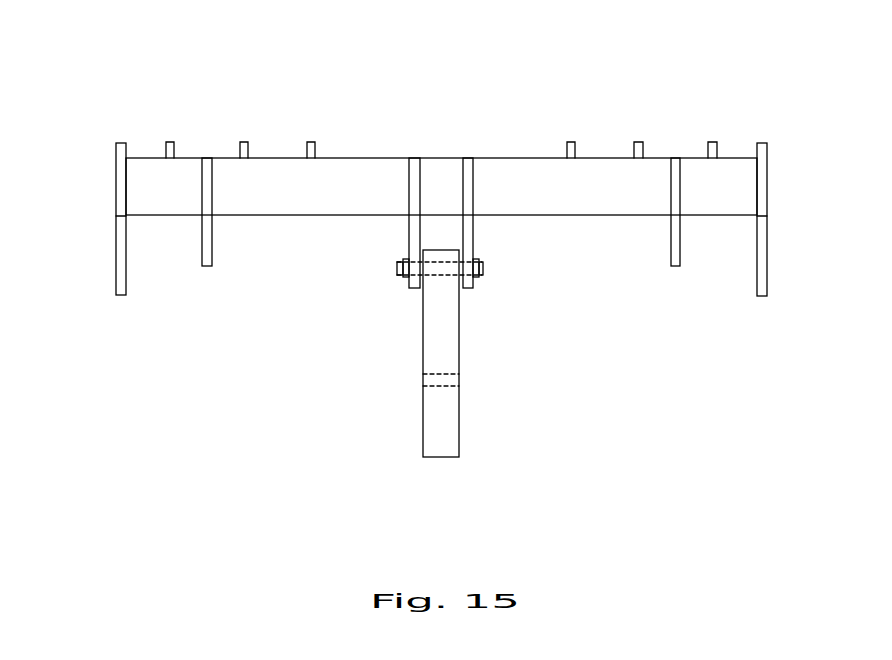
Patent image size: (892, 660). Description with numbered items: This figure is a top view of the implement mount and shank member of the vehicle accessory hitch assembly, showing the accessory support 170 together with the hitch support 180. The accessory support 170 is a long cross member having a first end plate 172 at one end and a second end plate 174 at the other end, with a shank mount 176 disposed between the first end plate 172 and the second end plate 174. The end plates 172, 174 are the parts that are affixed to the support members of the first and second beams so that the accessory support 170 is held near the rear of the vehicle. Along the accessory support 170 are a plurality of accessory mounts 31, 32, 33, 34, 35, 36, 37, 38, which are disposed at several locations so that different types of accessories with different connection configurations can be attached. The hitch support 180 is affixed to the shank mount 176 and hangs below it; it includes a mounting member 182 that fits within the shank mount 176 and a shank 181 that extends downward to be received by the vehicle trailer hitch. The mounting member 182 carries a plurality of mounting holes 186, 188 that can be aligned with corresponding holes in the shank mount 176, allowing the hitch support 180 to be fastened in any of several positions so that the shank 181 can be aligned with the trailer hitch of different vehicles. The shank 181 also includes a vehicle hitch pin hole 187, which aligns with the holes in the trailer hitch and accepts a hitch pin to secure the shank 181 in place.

The accessory support 170 is at (377, 118).
The first end plate 172 is at (116, 172).
The second end plate 174 is at (767, 172).
The shank mount 176 is at (473, 183).
The hitch support 180 is at (458, 309).
The shank 181 is at (423, 368).
The mounting member 182 is at (447, 250).
The mounting hole 186 is at (480, 295).
The mounting hole 188 is at (440, 278).
The vehicle hitch pin hole 187 is at (445, 386).
The accessory mount 31 is at (708, 152).
The accessory mount 32 is at (671, 247).
The accessory mount 33 is at (634, 152).
The accessory mount 34 is at (202, 248).
The accessory mount 35 is at (567, 150).
The accessory mount 36 is at (175, 155).
The accessory mount 37 is at (248, 152).
The accessory mount 38 is at (338, 142).